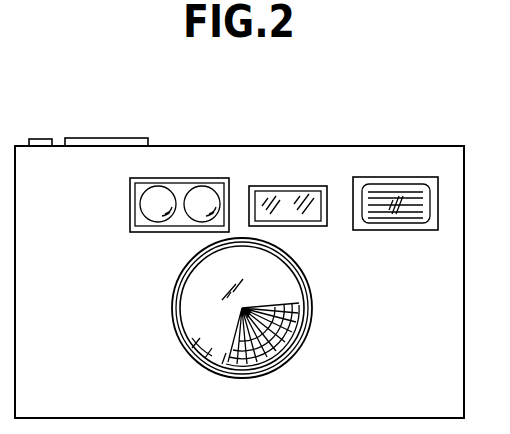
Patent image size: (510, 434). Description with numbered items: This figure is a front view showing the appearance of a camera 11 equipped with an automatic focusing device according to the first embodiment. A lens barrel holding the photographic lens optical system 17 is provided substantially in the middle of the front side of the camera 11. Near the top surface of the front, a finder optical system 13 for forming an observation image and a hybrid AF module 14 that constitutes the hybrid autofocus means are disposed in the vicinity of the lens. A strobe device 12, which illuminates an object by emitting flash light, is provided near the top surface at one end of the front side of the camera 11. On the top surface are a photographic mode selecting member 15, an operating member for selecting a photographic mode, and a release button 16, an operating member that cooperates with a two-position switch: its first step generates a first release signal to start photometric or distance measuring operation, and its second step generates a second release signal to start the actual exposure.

The camera 11 is at (366, 103).
The strobe device 12 is at (398, 177).
The finder optical system 13 is at (281, 186).
The hybrid AF module 14 is at (211, 178).
The photographic mode selecting member 15 is at (132, 138).
The release button 16 is at (40, 139).
The photographic lens optical system 17 is at (300, 302).